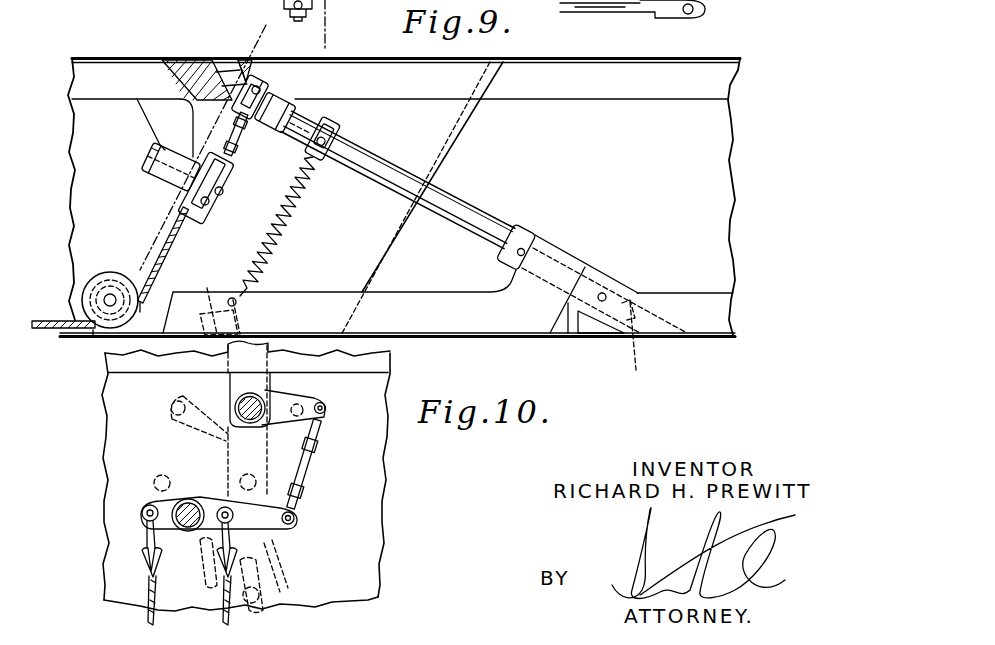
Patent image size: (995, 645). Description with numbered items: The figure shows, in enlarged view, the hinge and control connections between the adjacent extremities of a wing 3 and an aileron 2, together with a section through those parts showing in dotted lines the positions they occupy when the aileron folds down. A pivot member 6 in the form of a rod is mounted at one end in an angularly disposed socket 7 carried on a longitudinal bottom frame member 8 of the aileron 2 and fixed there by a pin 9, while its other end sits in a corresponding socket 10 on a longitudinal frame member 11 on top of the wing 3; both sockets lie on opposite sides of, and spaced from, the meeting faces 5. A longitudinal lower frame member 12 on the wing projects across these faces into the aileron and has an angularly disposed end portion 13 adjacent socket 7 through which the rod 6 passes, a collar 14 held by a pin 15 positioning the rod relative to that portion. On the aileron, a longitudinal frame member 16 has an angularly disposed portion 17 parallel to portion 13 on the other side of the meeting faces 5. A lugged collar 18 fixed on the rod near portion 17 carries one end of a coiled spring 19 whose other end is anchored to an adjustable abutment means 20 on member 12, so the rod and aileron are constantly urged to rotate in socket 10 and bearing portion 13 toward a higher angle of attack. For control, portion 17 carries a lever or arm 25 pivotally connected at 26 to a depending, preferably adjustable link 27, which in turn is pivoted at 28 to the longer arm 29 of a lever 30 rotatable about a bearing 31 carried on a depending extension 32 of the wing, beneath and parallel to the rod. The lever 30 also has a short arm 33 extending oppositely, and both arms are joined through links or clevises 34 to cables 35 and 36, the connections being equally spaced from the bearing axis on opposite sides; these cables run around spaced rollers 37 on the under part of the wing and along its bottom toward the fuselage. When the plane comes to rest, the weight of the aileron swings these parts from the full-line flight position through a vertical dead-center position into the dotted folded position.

In FIG. 9, the aileron 2 is at (620, 58).
In FIG. 9, the wing 3 is at (100, 58).
In FIG. 9, the meeting faces 5 is at (443, 160).
In FIG. 9, the pivot member 6 is at (472, 206).
In FIG. 9, the angularly disposed socket 7 is at (638, 346).
In FIG. 9, the longitudinal bottom frame member 8 is at (690, 293).
In FIG. 9, the pin 9 is at (606, 294).
In FIG. 9, the socket 10 is at (206, 62).
In FIG. 9, the longitudinal frame member 11 is at (162, 58).
In FIG. 9, the longitudinal lower frame member 12 is at (413, 292).
In FIG. 9, the angularly disposed end portion 13 is at (565, 252).
In FIG. 9, the collar 14 is at (533, 236).
In FIG. 9, the pin 15 is at (521, 248).
In FIG. 9, the longitudinal frame member 16 is at (363, 70).
In FIG. 9, the angularly disposed portion 17 is at (290, 131).
In FIG. 9, the lugged collar 18 is at (342, 129).
In FIG. 9, the spring 19 is at (263, 222).
In FIG. 9, the abutment means 20 is at (211, 292).
In FIG. 9, the lever or arm 25 is at (259, 84).
In FIG. 10, the lever or arm 25 is at (178, 398).
In FIG. 9, the pivotal connection 26 is at (272, 102).
In FIG. 10, the pivotal connection 26 is at (328, 408).
In FIG. 9, the depending link 27 is at (228, 153).
In FIG. 10, the depending link 27 is at (312, 469).
In FIG. 9, the pivotal connection 28 is at (221, 197).
In FIG. 10, the pivotal connection 28 is at (297, 520).
In FIG. 9, the longer arm 29 is at (204, 207).
In FIG. 10, the longer arm 29 is at (291, 532).
In FIG. 10, the lever 30 is at (232, 495).
In FIG. 9, the bearing 31 is at (148, 158).
In FIG. 10, the bearing 31 is at (240, 404).
In FIG. 9, the depending extension 32 is at (192, 139).
In FIG. 10, the short arm 33 is at (164, 480).
In FIG. 9, the links or clevises 34 is at (178, 205).
In FIG. 10, the links or clevises 34 is at (147, 535).
In FIG. 10, the cable 35 is at (149, 587).
In FIG. 9, the cable 36 is at (144, 276).
In FIG. 10, the cable 36 is at (222, 612).
In FIG. 9, the rollers 37 is at (86, 284).